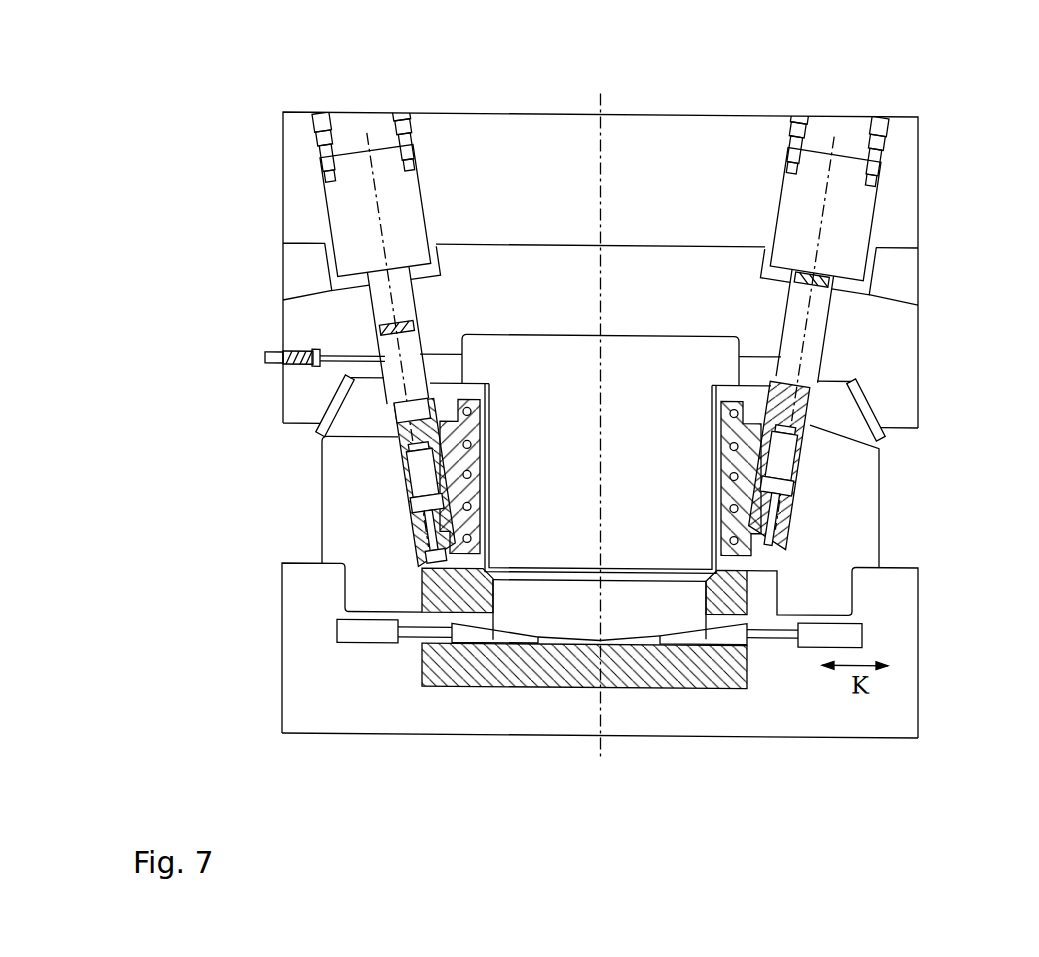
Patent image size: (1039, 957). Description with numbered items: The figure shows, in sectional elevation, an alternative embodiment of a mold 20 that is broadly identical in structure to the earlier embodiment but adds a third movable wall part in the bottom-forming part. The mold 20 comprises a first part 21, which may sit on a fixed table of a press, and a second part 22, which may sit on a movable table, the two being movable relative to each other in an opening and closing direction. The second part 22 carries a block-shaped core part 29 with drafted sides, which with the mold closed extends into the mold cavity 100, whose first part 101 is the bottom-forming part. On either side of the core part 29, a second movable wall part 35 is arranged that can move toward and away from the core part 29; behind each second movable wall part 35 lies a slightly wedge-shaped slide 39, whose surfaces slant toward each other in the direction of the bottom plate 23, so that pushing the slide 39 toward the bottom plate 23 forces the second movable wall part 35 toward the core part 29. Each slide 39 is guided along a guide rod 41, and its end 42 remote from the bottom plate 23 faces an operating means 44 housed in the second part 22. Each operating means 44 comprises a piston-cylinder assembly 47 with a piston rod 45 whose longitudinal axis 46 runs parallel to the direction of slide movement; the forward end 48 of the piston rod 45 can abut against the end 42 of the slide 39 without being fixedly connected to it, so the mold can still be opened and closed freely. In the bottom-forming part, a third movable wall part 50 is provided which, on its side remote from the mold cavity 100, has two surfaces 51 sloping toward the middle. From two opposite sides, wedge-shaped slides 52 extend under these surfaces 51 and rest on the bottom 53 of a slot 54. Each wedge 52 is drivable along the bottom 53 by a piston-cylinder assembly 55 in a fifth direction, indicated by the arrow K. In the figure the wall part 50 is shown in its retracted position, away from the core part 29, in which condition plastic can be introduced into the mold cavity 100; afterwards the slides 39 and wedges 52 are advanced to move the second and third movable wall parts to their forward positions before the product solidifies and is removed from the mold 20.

The mold 20 is at (210, 721).
The first part 21 is at (240, 655).
The second part 22 is at (240, 140).
The bottom plate 23 is at (890, 711).
The core part 29 is at (588, 404).
The second movable wall part 35 is at (472, 424).
The slide 39 is at (398, 436).
The guide rod 41 is at (752, 527).
The end of the slide 42 is at (852, 400).
The operating means 44 is at (312, 276).
The piston rod 45 is at (385, 313).
The longitudinal axis 46 is at (370, 178).
The piston-cylinder assembly 47 is at (410, 208).
The forward end 48 is at (800, 348).
The third movable wall part 50 is at (587, 619).
The surfaces sloping towards the middle 51 is at (553, 635).
The wedge-shaped slide 52 is at (465, 633).
The bottom of the slot 53 is at (475, 633).
The slot 54 is at (715, 620).
The piston-cylinder assembly 55 is at (365, 631).
The mold cavity 100 is at (660, 570).
The first part of the mold cavity 101 is at (528, 567).